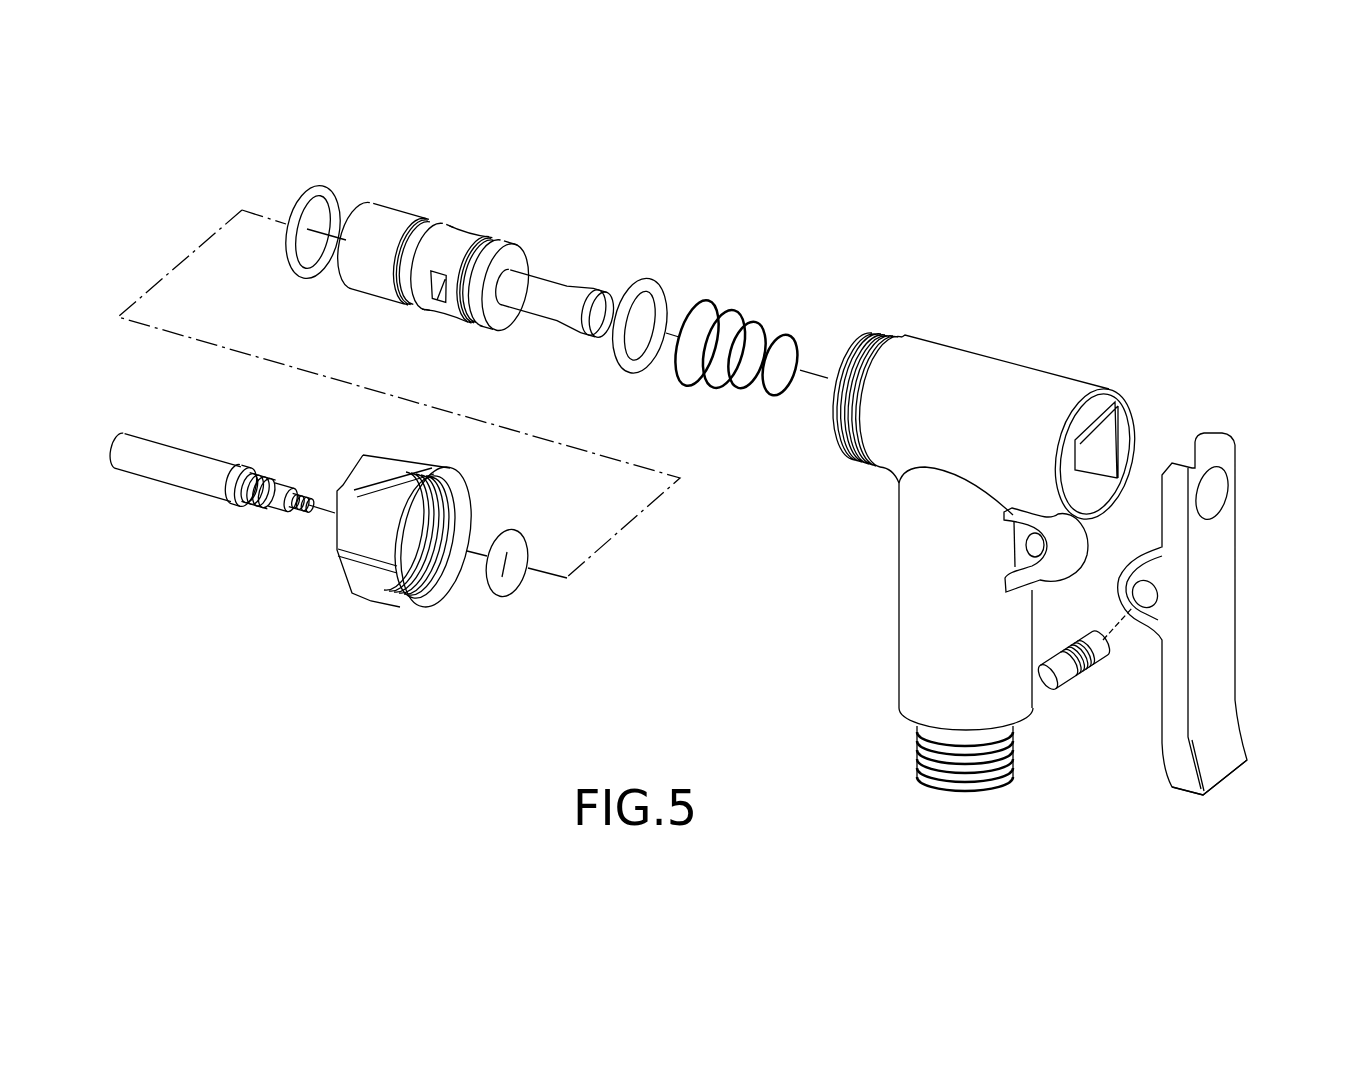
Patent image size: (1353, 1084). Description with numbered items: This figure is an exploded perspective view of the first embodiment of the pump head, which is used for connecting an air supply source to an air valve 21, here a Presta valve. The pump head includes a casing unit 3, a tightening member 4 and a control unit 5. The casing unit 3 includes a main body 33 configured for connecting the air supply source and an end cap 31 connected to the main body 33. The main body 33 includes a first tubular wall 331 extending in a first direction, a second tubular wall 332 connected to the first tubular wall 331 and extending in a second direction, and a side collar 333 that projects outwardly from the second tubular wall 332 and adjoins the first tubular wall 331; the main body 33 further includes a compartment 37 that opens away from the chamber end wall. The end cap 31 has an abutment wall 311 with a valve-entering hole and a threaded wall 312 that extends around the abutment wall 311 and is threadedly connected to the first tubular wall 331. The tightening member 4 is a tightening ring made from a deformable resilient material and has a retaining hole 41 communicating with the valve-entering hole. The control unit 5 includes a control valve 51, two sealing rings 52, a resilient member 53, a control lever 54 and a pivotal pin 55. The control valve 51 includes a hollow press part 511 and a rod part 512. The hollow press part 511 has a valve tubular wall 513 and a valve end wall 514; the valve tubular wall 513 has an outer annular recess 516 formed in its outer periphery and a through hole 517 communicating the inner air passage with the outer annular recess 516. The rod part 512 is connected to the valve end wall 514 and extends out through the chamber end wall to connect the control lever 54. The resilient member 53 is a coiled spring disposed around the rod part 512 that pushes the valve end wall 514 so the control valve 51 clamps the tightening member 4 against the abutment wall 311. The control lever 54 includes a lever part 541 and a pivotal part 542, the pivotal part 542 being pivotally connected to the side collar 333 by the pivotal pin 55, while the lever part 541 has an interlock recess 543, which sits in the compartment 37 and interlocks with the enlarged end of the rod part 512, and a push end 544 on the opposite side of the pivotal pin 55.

The casing unit 3 is at (999, 533).
The first tubular wall 331 is at (976, 365).
The second tubular wall 332 is at (909, 568).
The side collar 333 is at (1066, 532).
The main body 33 is at (919, 629).
The compartment 37 is at (1102, 430).
The tightening member 4 is at (511, 593).
The retaining hole 41 is at (506, 555).
The control unit 5 is at (524, 305).
The control valve 51 is at (470, 263).
The hollow press part 511 is at (400, 240).
The valve tubular wall 513 is at (413, 225).
The rod part 512 is at (550, 308).
The valve end wall 514 is at (503, 318).
The outer annular recess 516 is at (438, 247).
The through hole 517 is at (432, 290).
The sealing rings 52 is at (309, 202).
The resilient member 53 is at (748, 392).
The control lever 54 is at (1201, 636).
The lever part 541 is at (1215, 563).
The pivotal part 542 is at (1140, 610).
The interlock recess 543 is at (1218, 482).
The push end 544 is at (1218, 768).
The pivotal pin 55 is at (1065, 673).
The air valve 21 is at (208, 470).
The end cap 31 is at (387, 551).
The abutment wall 311 is at (408, 522).
The threaded wall 312 is at (381, 592).